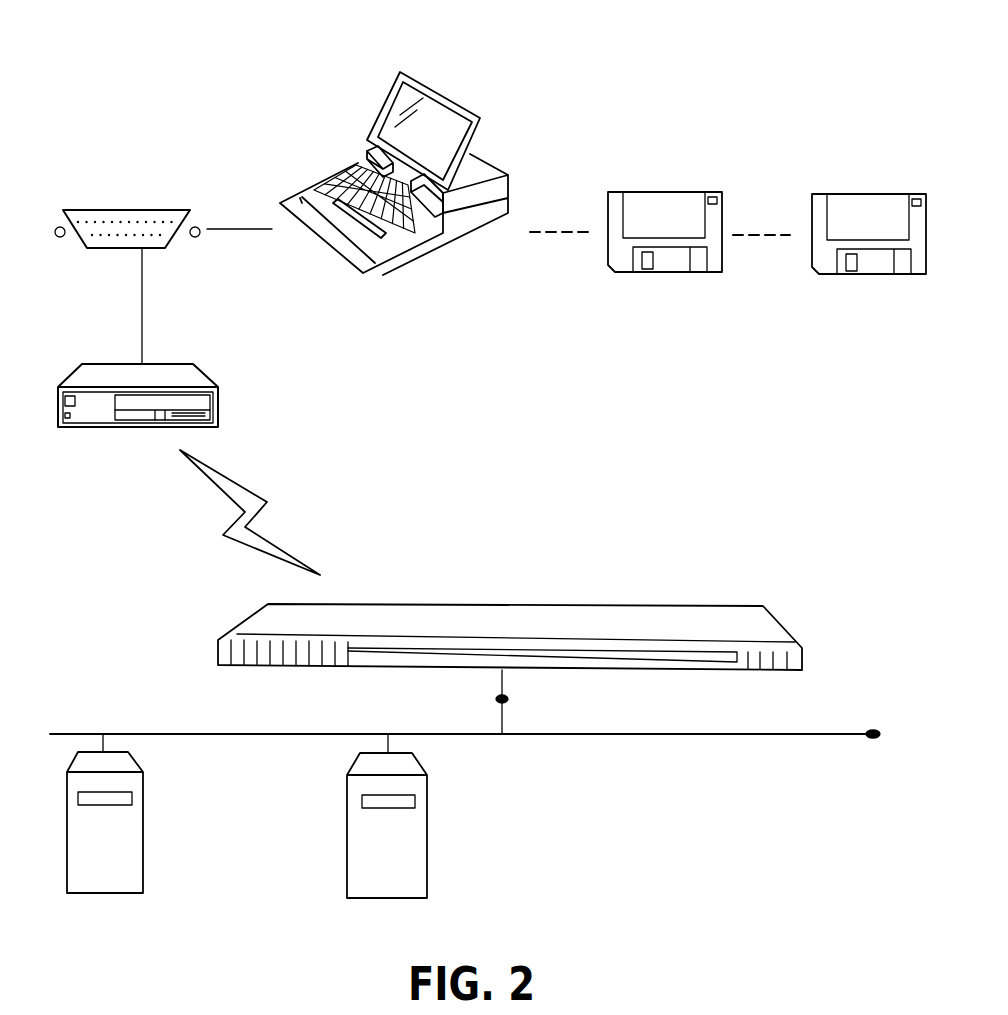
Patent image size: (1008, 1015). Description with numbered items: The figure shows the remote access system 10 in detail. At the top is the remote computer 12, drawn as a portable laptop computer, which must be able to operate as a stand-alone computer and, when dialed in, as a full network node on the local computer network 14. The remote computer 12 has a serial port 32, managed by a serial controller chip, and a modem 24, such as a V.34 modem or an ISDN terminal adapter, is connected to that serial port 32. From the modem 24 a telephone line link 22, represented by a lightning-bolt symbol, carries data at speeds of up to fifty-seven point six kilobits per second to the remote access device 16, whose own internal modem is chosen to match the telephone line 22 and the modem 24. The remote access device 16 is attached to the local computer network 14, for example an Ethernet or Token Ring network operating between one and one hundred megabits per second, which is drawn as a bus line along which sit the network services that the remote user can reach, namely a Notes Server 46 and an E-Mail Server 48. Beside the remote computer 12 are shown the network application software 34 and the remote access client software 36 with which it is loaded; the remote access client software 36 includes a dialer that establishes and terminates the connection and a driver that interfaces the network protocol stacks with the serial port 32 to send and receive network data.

The remote access system 10 is at (596, 80).
The remote computer 12 is at (503, 172).
The local computer network 14 is at (830, 734).
The remote access device 16 is at (778, 628).
The telephone line link 22 is at (248, 490).
The modem 24 is at (205, 378).
The serial port 32 is at (131, 210).
The network application software 34 is at (657, 197).
The remote access client software 36 is at (857, 201).
The Notes Server 46 is at (143, 867).
The E-Mail Server 48 is at (427, 870).